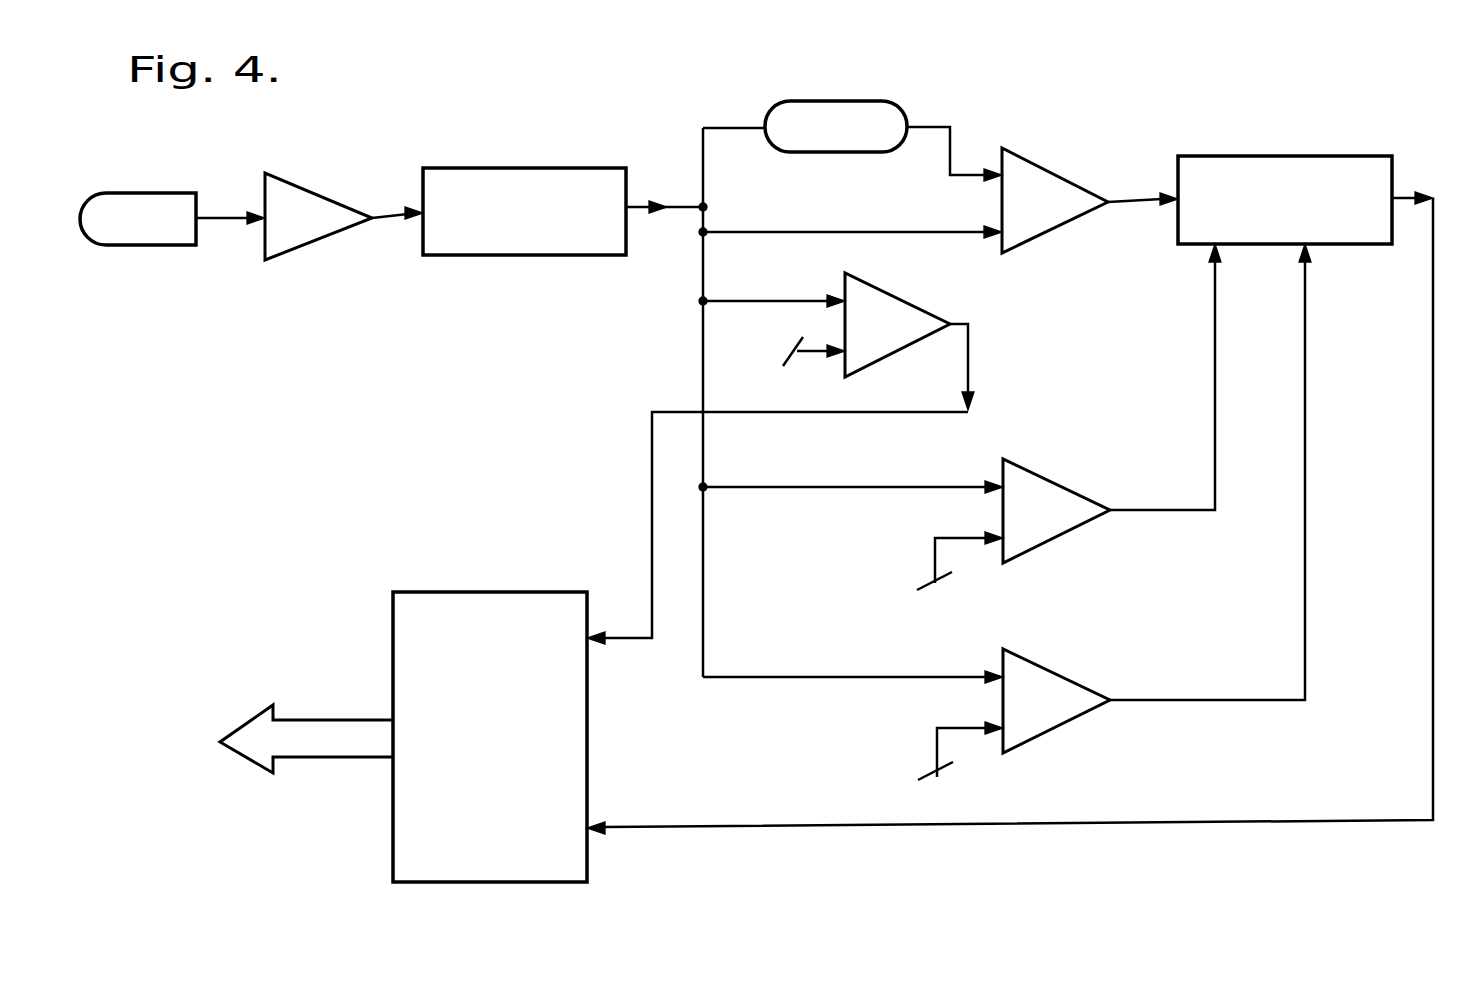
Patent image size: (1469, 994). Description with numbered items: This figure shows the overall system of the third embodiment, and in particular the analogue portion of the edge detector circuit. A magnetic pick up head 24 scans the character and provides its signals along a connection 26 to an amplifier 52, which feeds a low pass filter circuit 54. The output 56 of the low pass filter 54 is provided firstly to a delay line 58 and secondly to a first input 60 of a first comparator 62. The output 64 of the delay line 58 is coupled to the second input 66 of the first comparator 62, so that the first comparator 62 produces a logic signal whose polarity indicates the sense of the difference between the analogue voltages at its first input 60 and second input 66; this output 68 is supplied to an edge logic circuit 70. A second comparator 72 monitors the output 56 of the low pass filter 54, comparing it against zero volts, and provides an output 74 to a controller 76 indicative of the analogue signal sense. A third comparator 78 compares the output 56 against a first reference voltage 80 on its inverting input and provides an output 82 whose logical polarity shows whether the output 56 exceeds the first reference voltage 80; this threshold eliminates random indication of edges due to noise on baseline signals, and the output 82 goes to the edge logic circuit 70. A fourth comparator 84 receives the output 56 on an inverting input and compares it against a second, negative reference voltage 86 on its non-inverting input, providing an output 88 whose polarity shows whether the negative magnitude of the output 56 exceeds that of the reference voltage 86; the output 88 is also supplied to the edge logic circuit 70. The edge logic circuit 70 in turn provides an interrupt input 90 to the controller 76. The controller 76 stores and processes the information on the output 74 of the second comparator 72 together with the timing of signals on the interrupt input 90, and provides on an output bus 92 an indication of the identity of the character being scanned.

The magnetic pick up head 24 is at (147, 245).
The head output line 26 is at (222, 213).
The amplifier 52 is at (297, 242).
The low pass filter circuit 54 is at (498, 255).
The output of the low pass filter 56 is at (702, 147).
The delay line 58 is at (832, 99).
The first input of the first comparator 60 is at (952, 232).
The first comparator 62 is at (1055, 230).
The output of the delay line 64 is at (955, 137).
The second input of the first comparator 66 is at (950, 167).
The output of the first comparator 68 is at (1140, 198).
The edge logic circuit 70 is at (1298, 152).
The second comparator 72 is at (882, 290).
The output of the second comparator 74 is at (893, 412).
The controller 76 is at (455, 590).
The third comparator 78 is at (1083, 529).
The first reference voltage 80 is at (943, 575).
The output of the third comparator 82 is at (1215, 423).
The fourth comparator 84 is at (1077, 682).
The second negative reference voltage 86 is at (935, 783).
The output of the fourth comparator 88 is at (1300, 472).
The interrupt input 90 is at (702, 823).
The output bus 92 is at (343, 720).